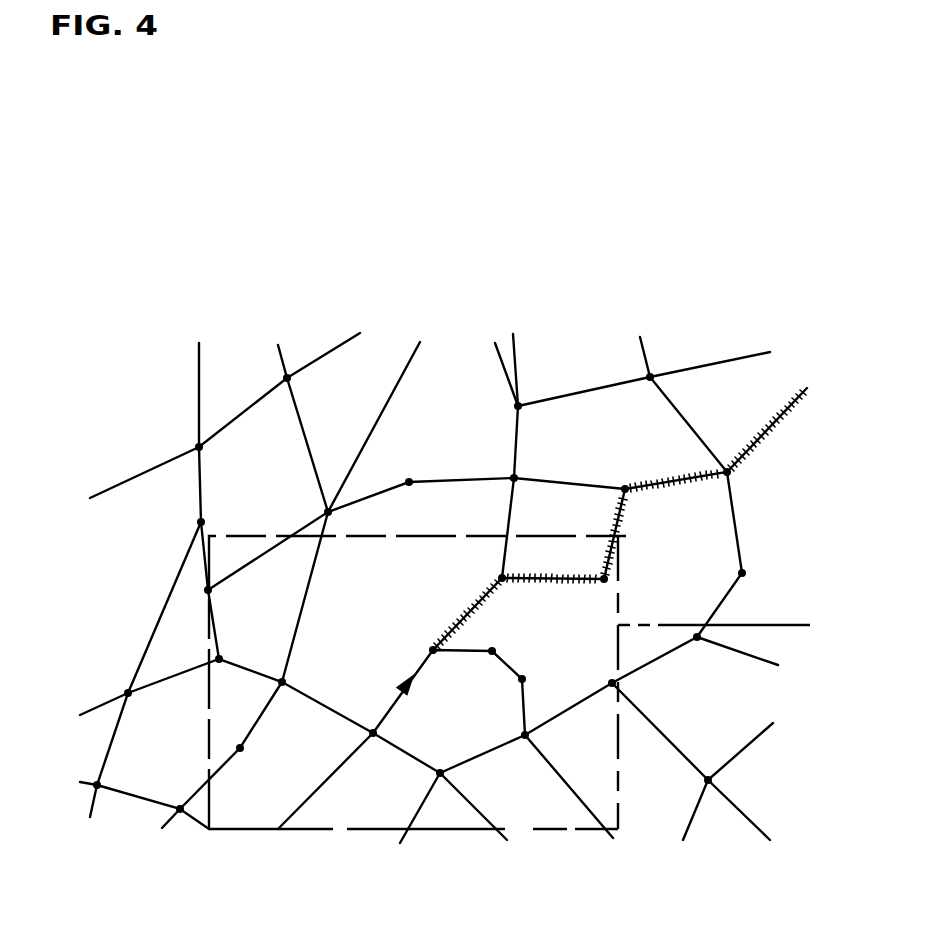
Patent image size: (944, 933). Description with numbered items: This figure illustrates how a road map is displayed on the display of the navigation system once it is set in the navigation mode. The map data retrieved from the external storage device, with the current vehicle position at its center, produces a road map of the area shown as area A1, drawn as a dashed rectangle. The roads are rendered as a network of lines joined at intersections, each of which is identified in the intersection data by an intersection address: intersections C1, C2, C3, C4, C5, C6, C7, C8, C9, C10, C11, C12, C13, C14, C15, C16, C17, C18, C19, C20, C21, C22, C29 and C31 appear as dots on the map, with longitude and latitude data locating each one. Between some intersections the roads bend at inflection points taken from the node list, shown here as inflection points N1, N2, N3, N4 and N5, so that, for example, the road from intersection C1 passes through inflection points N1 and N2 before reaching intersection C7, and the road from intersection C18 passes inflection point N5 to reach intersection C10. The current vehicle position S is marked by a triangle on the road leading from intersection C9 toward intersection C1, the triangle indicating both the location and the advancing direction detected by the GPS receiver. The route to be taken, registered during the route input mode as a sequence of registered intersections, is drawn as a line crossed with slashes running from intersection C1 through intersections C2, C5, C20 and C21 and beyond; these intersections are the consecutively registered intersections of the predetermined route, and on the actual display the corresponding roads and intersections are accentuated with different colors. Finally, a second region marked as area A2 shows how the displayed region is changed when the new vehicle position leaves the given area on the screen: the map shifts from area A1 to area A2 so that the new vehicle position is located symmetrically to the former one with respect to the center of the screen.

The intersection address C1 is at (468, 667).
The intersection address C2 is at (536, 596).
The intersection address C3 is at (497, 466).
The intersection address C4 is at (498, 413).
The intersection address C5 is at (645, 587).
The intersection address C6 is at (607, 703).
The intersection address C7 is at (521, 756).
The intersection address C8 is at (446, 757).
The intersection address C9 is at (374, 754).
The intersection address C10 is at (307, 681).
The intersection address C11 is at (228, 678).
The intersection address C12 is at (231, 599).
The intersection address C13 is at (223, 515).
The intersection address C14 is at (222, 457).
The intersection address C15 is at (313, 388).
The intersection address C16 is at (149, 708).
The intersection address C17 is at (121, 776).
The intersection address C18 is at (173, 796).
The intersection address C19 is at (351, 529).
The intersection address C20 is at (671, 504).
The intersection address C21 is at (774, 483).
The intersection address C22 is at (642, 395).
The intersection address C29 is at (700, 654).
The intersection address C31 is at (681, 784).
The inflection point N1 is at (507, 641).
The inflection point N2 is at (538, 679).
The inflection point N3 is at (412, 468).
The inflection point N4 is at (761, 582).
The inflection point N5 is at (256, 762).
The current vehicle position S is at (405, 680).
The displayed road map area A1 is at (583, 833).
The new displayed road map area A2 is at (783, 628).